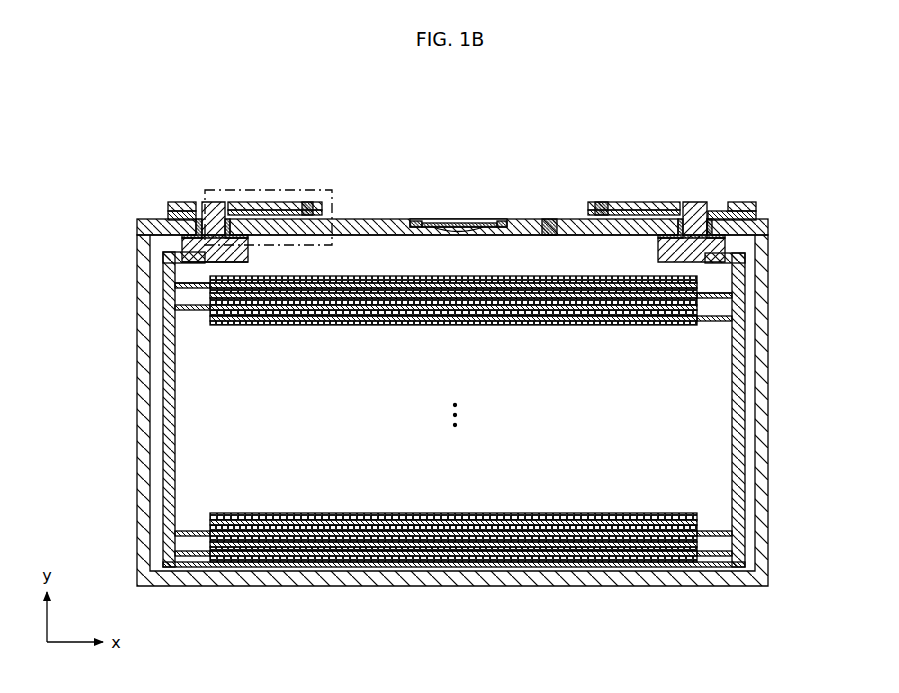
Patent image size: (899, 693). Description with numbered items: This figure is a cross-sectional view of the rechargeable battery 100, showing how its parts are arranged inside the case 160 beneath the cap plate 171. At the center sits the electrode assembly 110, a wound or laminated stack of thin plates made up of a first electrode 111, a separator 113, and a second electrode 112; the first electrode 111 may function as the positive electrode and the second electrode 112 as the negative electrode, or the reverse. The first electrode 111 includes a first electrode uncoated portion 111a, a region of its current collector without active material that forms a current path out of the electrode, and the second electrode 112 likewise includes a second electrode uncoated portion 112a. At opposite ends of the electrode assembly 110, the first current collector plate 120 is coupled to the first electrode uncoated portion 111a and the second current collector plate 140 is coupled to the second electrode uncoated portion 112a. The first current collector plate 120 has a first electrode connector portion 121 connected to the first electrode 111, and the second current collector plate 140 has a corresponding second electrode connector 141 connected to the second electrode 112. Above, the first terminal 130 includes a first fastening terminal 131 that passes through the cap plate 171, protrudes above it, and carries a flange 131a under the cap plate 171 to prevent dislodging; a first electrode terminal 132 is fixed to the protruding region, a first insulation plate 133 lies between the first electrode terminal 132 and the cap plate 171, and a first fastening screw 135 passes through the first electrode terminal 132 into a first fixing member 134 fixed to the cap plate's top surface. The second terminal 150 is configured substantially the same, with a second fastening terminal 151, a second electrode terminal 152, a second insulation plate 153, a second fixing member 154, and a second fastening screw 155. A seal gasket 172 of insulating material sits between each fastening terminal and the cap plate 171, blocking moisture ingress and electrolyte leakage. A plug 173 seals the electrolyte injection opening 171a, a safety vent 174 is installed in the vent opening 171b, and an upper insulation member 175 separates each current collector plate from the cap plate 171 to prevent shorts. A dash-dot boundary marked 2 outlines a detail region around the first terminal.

The rechargeable battery 100 is at (808, 138).
The electrode assembly 110 is at (545, 574).
The first electrode 111 is at (300, 548).
The first electrode uncoated portion 111a is at (193, 537).
The second electrode 112 is at (402, 560).
The second electrode uncoated portion 112a is at (712, 557).
The separator 113 is at (355, 556).
The first current collector plate 120 is at (132, 407).
The first electrode connector portion 121 is at (163, 470).
The first terminal 130 is at (335, 137).
The first fastening terminal 131 is at (212, 202).
The flange 131a is at (242, 265).
The first electrode terminal 132 is at (228, 219).
The first insulation plate 133 is at (262, 202).
The first fixing member 134 is at (312, 212).
The first fastening screw 135 is at (304, 202).
The second current collector plate 140 is at (776, 407).
The second electrode connector 141 is at (745, 470).
The second terminal 150 is at (585, 137).
The second fastening terminal 151 is at (697, 202).
The second electrode terminal 152 is at (681, 219).
The second insulation plate 153 is at (650, 202).
The second fixing member 154 is at (600, 202).
The second fastening screw 155 is at (612, 212).
The case 160 is at (630, 580).
The cap plate 171 is at (370, 219).
The electrolyte injection opening 171a is at (551, 238).
The vent opening 171b is at (455, 223).
The seal gasket 172 is at (185, 211).
The plug 173 is at (549, 219).
The safety vent 174 is at (500, 222).
The upper insulation member 175 is at (178, 202).
The section line 2 is at (330, 190).